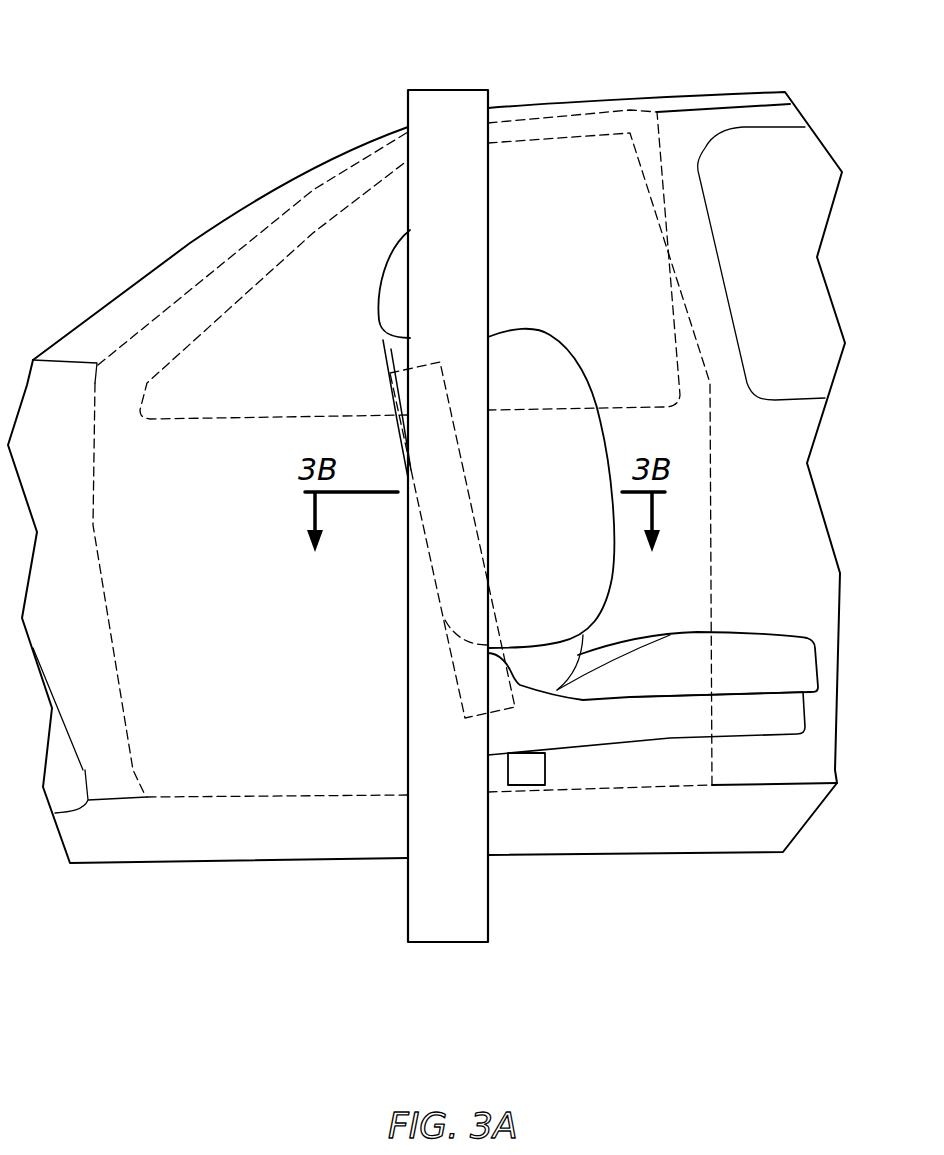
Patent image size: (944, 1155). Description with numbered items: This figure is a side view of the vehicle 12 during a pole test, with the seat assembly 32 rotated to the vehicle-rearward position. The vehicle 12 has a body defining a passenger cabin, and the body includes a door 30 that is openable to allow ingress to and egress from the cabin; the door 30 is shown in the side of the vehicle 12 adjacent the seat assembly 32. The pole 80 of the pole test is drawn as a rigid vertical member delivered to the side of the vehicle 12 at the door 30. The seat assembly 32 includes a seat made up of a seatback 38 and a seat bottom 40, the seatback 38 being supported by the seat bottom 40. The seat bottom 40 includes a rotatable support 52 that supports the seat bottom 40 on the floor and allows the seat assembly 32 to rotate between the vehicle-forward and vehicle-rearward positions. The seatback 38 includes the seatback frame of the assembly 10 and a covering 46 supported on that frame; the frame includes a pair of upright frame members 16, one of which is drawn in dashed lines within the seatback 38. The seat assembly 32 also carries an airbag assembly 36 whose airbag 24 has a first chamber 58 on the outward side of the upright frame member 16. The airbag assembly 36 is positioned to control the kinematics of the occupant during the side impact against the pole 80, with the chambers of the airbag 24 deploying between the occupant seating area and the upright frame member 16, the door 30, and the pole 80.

The assembly 10 is at (323, 256).
The vehicle 12 is at (190, 196).
The upright frame member 16 is at (405, 408).
The airbag 24 is at (617, 578).
The door 30 is at (228, 687).
The seat assembly 32 is at (378, 662).
The airbag assembly 36 is at (590, 336).
The seatback 38 is at (338, 427).
The seat bottom 40 is at (817, 652).
The covering 46 is at (393, 353).
The rotatable support 52 is at (547, 770).
The first chamber 58 is at (485, 498).
The pole 80 is at (430, 90).